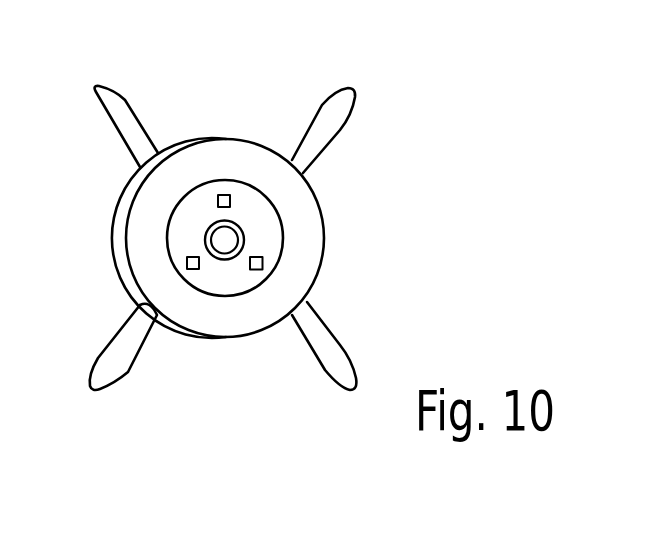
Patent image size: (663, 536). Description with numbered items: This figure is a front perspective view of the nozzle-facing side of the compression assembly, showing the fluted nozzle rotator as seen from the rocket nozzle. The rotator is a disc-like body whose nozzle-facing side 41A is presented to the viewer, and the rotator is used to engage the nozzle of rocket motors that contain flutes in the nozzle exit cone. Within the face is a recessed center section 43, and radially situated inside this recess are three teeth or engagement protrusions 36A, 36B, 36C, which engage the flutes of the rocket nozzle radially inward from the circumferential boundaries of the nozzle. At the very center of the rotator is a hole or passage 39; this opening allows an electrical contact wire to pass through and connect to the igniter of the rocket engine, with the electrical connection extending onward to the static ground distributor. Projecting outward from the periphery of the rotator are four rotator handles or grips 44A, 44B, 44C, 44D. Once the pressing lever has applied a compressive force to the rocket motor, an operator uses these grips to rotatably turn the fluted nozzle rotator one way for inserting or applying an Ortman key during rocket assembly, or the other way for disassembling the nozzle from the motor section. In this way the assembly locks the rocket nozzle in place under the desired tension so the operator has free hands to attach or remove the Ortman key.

The nozzle-facing side 41A is at (147, 205).
The recessed center section 43 is at (232, 283).
The hole or passage 39 is at (223, 242).
The engagement protrusion 36A is at (224, 190).
The engagement protrusion 36B is at (263, 263).
The engagement protrusion 36C is at (187, 263).
The rotator handle or grip 44A is at (123, 125).
The rotator handle or grip 44B is at (330, 105).
The rotator handle or grip 44C is at (327, 348).
The rotator handle or grip 44D is at (120, 352).